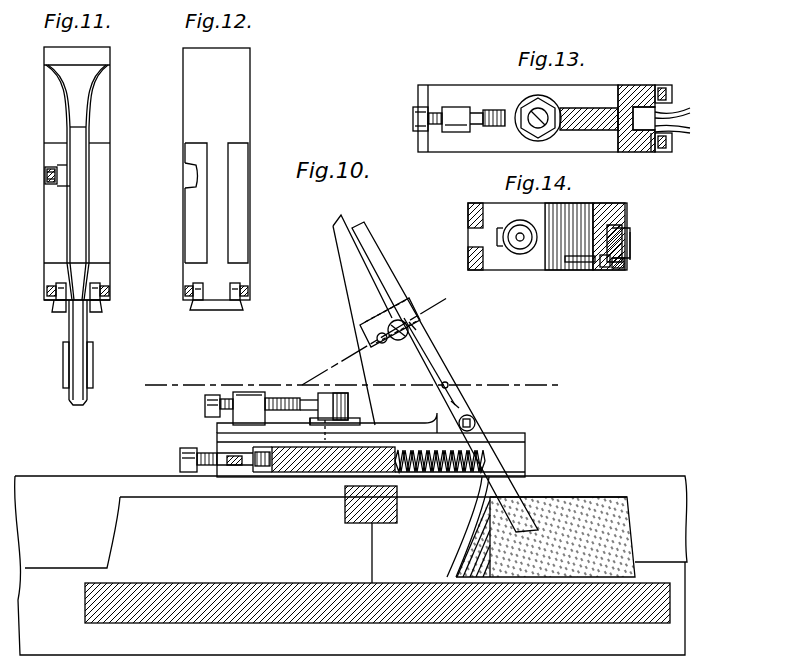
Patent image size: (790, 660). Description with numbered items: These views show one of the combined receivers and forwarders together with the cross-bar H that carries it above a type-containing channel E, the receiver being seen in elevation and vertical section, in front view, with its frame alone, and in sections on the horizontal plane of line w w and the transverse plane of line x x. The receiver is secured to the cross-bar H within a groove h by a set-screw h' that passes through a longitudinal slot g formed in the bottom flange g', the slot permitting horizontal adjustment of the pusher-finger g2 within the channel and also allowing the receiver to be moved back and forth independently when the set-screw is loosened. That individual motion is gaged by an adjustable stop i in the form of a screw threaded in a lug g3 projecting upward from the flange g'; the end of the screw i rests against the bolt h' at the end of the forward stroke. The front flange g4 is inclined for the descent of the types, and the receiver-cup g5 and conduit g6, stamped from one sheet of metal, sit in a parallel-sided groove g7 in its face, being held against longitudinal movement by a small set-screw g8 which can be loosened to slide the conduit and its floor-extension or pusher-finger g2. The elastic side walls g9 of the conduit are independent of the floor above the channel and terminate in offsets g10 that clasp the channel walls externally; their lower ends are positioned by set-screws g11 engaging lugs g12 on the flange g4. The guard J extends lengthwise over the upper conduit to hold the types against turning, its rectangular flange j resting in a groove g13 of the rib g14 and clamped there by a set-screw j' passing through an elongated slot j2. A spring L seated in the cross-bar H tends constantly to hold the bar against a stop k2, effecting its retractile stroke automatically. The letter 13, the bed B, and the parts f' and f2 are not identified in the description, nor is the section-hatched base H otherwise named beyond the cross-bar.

In FIG. 11, the longitudinal slot g is at (68, 173).
In FIG. 13, the longitudinal slot g is at (458, 112).
In FIG. 13, the bottom flange g' is at (518, 118).
In FIG. 10, the bottom flange g' is at (371, 444).
In FIG. 11, the pusher-finger g2 is at (79, 413).
In FIG. 10, the pusher-finger g2 is at (541, 527).
In FIG. 10, the lug g3 is at (235, 408).
In FIG. 13, the front flange g4 is at (636, 109).
In FIG. 10, the front flange g4 is at (362, 320).
In FIG. 11, the receiver-cup g5 is at (85, 91).
In FIG. 10, the receiver-cup g5 is at (445, 377).
In FIG. 11, the conduit g6 is at (78, 271).
In FIG. 14, the conduit g6 is at (625, 232).
In FIG. 10, the conduit g6 is at (431, 363).
In FIG. 12, the groove g7 is at (216, 174).
In FIG. 13, the set-screw g8 is at (648, 152).
In FIG. 10, the set-screw g8 is at (448, 383).
In FIG. 11, the side wall g9 is at (69, 318).
In FIG. 11, the offset g10 is at (65, 344).
In FIG. 11, the set-screw g11 is at (48, 291).
In FIG. 12, the set-screw g11 is at (232, 286).
In FIG. 13, the set-screw g11 is at (672, 92).
In FIG. 10, the set-screw g11 is at (475, 424).
In FIG. 11, the lug g12 is at (60, 283).
In FIG. 12, the lug g12 is at (198, 283).
In FIG. 13, the lug g12 is at (674, 138).
In FIG. 10, the lug g12 is at (474, 418).
In FIG. 12, the groove g13 is at (180, 175).
In FIG. 10, the groove g13 is at (377, 337).
In FIG. 14, the rib g14 is at (620, 204).
In FIG. 10, the rib g14 is at (381, 321).
In FIG. 11, the screw 13 is at (48, 163).
In FIG. 14, the rectangular flange j is at (614, 276).
In FIG. 11, the set-screw j' is at (37, 188).
In FIG. 10, the set-screw j' is at (423, 320).
In FIG. 10, the elongated slot j2 is at (397, 340).
In FIG. 14, the guard J is at (633, 243).
In FIG. 10, the guard J is at (390, 320).
In FIG. 13, the adjustable stop i is at (466, 109).
In FIG. 10, the adjustable stop i is at (291, 395).
In FIG. 13, the groove h is at (538, 118).
In FIG. 10, the set-screw h' is at (335, 409).
In FIG. 10, the stop k2 is at (205, 458).
In FIG. 10, the spring L is at (440, 453).
In FIG. 10, the type-containing channel E is at (351, 565).
In FIG. 10, the bed plate B is at (377, 603).
In FIG. 10, the cross-bar H is at (334, 515).
In FIG. 10, the section line x x is at (375, 341).
In FIG. 10, the section line w w is at (346, 379).
In FIG. 14, the clamp finger f' is at (597, 275).
In FIG. 14, the clamp plate f2 is at (580, 263).